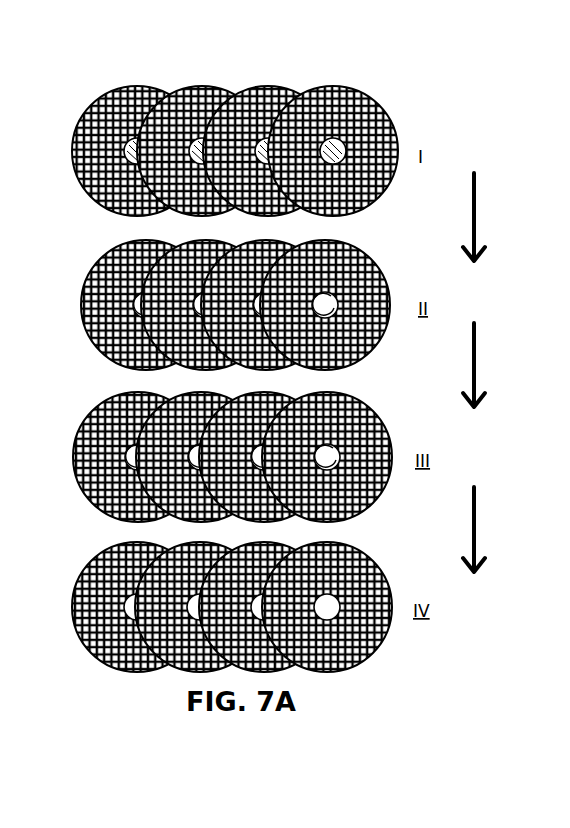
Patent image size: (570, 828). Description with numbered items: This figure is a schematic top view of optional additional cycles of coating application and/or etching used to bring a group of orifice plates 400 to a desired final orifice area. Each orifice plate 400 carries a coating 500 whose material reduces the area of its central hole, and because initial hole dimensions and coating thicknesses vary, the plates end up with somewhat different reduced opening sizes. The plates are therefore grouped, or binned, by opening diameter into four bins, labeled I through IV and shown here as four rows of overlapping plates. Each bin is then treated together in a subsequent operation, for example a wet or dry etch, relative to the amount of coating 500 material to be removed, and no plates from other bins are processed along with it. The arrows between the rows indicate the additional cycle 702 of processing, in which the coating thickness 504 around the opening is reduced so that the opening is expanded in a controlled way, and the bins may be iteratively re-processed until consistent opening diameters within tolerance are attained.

The orifice plate 400 is at (124, 85).
The coating 500 is at (350, 136).
The thickness 504 is at (343, 140).
The additional cycle 702 is at (477, 362).